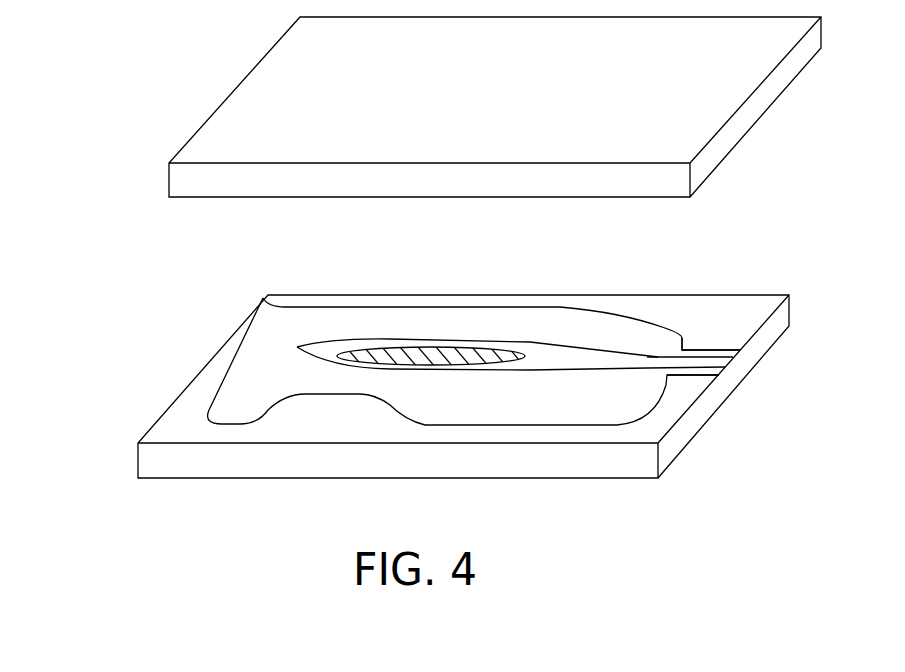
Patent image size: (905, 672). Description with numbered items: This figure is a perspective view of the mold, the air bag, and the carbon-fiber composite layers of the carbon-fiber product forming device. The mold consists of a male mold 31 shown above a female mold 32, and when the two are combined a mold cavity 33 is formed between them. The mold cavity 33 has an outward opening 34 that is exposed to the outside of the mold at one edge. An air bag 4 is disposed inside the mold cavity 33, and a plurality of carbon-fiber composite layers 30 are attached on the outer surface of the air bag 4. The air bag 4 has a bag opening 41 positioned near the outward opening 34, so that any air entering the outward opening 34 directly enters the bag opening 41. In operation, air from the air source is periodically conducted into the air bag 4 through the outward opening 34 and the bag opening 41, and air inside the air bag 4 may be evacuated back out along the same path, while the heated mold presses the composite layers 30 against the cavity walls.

The air bag 4 is at (350, 304).
The carbon-fiber composite layers 30 is at (357, 355).
The male mold 31 is at (237, 145).
The female mold 32 is at (187, 427).
The mold cavity 33 is at (277, 380).
The outward opening 34 is at (726, 348).
The bag opening 41 is at (715, 363).